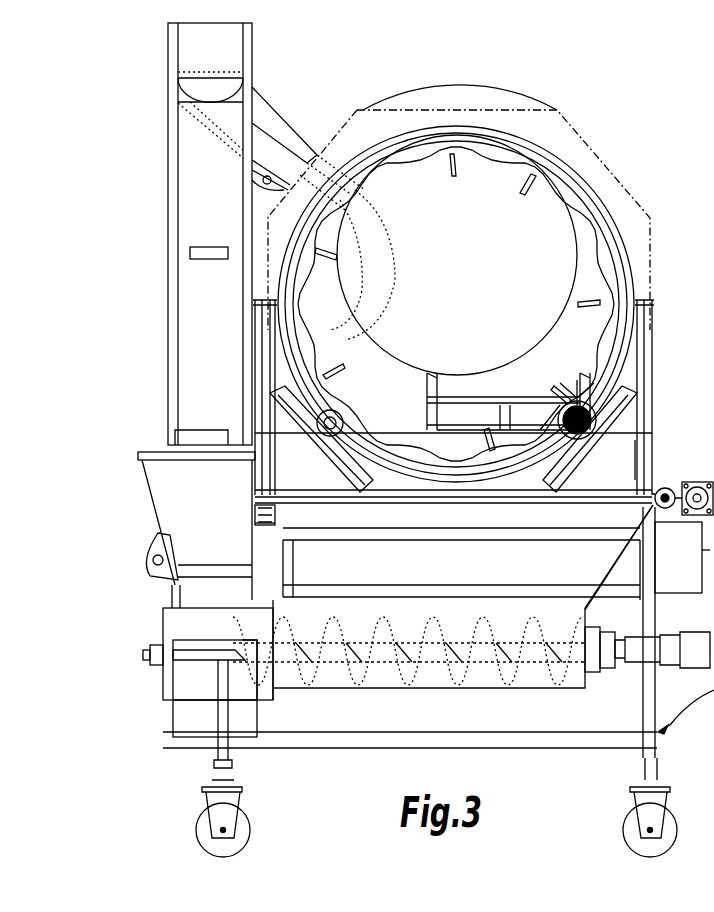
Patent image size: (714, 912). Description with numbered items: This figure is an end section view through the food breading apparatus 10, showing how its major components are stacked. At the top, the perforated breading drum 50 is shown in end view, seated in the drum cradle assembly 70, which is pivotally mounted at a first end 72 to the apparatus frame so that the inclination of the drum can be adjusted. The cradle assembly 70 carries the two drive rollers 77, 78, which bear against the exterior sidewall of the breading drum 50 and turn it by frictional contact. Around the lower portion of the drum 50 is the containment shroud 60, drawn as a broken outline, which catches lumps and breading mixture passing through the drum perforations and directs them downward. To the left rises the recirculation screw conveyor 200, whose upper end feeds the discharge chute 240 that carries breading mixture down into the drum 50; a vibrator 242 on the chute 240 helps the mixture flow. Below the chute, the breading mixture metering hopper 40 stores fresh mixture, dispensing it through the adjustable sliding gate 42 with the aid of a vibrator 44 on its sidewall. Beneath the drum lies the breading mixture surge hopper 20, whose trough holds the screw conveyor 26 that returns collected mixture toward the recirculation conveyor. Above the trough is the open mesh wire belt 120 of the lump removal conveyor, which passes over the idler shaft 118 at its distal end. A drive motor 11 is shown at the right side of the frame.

The food breading apparatus 10 is at (612, 92).
The recirculation screw conveyor 200 is at (168, 238).
The discharge chute 240 is at (285, 118).
The vibrator 242 is at (255, 197).
The breading drum 50 is at (493, 77).
The containment shroud 60 is at (625, 187).
The drum cradle assembly 70 is at (640, 423).
The drive roller 78 is at (330, 410).
The drive roller 77 is at (590, 415).
The drive motor 11 is at (664, 488).
The breading mixture metering hopper 40 is at (196, 530).
The idler shaft 118 is at (262, 497).
The first end 72 is at (255, 523).
The vibrator 44 is at (148, 565).
The adjustable sliding gate 42 is at (210, 577).
The open mesh wire belt 120 is at (461, 570).
The breading mixture surge hopper 20 is at (352, 688).
The screw conveyor 26 is at (413, 642).